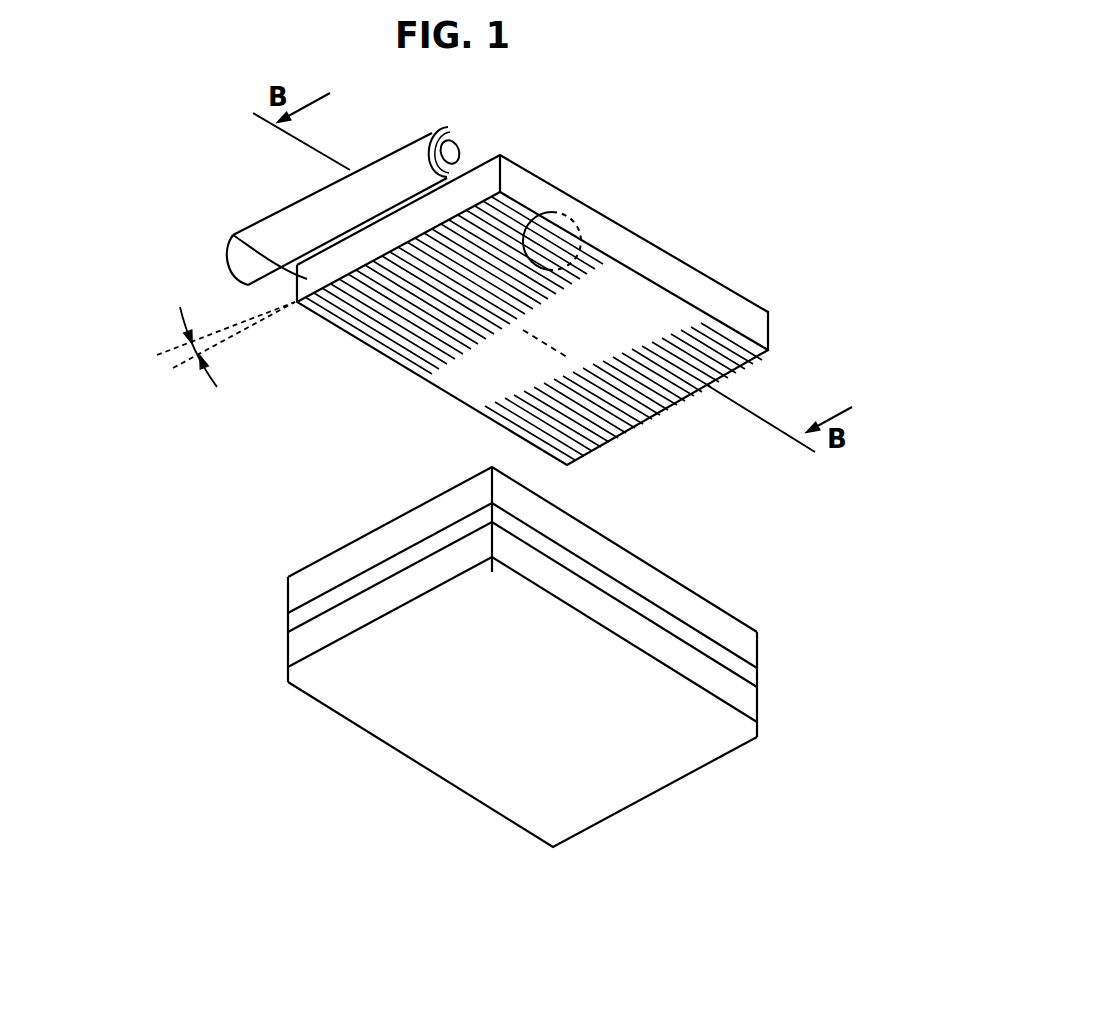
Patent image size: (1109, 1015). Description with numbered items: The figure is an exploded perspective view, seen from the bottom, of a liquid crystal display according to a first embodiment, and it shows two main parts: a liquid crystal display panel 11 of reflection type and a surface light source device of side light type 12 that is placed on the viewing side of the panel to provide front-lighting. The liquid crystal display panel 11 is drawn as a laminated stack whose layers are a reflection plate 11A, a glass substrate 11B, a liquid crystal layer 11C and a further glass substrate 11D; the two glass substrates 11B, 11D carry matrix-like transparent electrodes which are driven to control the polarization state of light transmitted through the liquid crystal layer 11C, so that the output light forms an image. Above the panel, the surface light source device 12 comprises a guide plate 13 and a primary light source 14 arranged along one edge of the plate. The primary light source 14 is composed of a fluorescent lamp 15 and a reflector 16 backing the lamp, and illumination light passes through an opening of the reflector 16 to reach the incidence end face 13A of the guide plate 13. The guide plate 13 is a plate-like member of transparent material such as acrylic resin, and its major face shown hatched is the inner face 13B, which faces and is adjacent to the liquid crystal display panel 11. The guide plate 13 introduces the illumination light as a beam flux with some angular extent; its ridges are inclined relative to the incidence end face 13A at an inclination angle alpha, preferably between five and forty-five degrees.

The liquid crystal display panel 11 is at (327, 805).
The reflection plate 11A is at (715, 742).
The glass substrate 11B is at (752, 706).
The liquid crystal layer 11C is at (760, 674).
The glass substrate 11D is at (760, 637).
The surface light source device of side light type 12 is at (250, 415).
The guide plate 13 is at (682, 280).
The incidence end face 13A is at (245, 240).
The inner face 13B is at (447, 362).
The primary light source 14 is at (255, 207).
The fluorescent lamp 15 is at (456, 148).
The reflector 16 is at (403, 167).